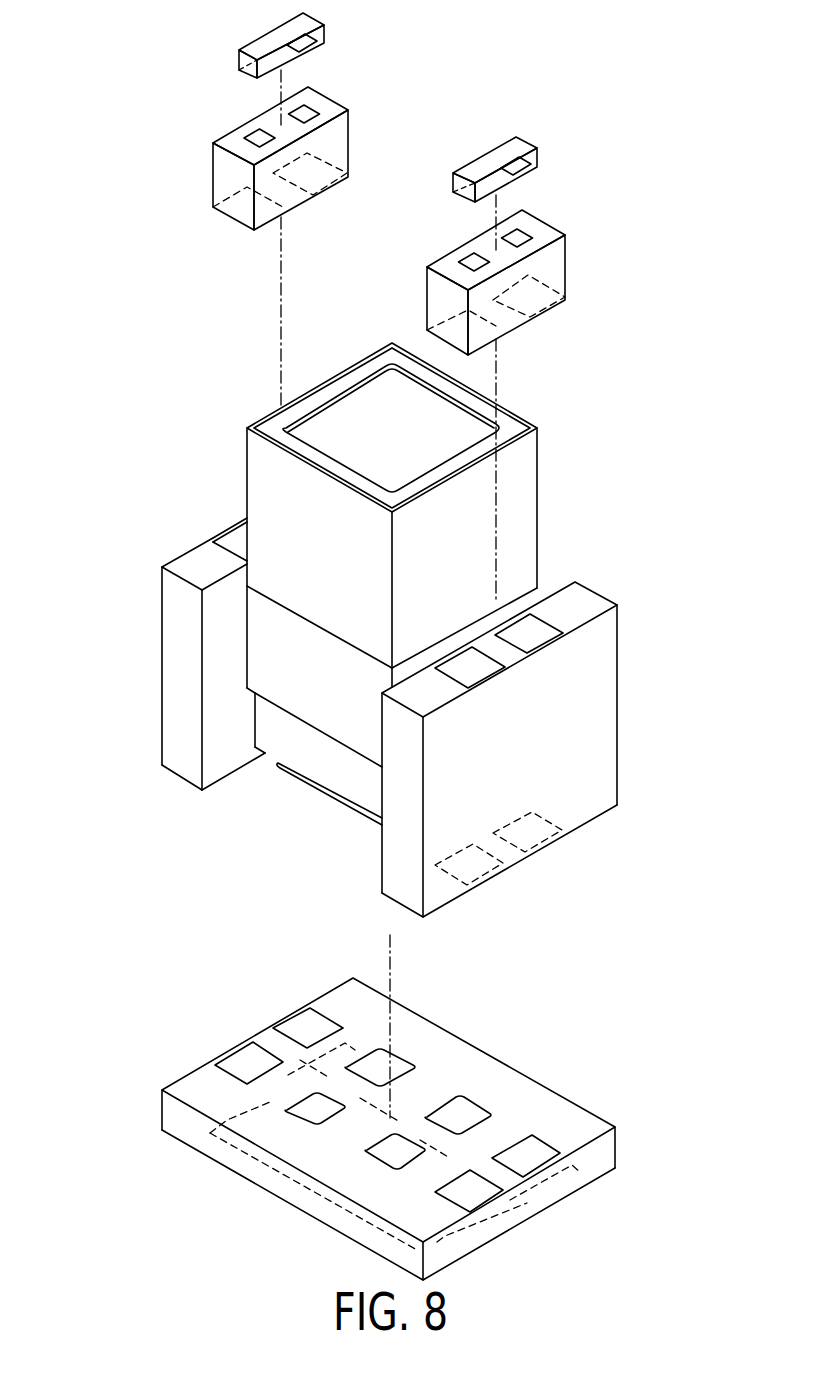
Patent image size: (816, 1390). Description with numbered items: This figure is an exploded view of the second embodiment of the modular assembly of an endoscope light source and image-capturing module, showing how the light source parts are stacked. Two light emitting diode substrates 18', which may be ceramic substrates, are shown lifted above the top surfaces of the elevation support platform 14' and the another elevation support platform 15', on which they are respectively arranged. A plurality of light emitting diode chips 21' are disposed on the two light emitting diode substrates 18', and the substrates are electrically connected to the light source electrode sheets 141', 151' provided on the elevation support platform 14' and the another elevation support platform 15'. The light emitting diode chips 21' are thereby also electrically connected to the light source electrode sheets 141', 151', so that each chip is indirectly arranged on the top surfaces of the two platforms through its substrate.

The light emitting diode chip 21' is at (398, 104).
The light emitting diode substrate 18' is at (397, 221).
The elevation support platform 14' is at (144, 664).
The light source electrode sheet 141' is at (161, 492).
The another elevation support platform 15' is at (562, 749).
The light source electrode sheet 151' is at (589, 630).